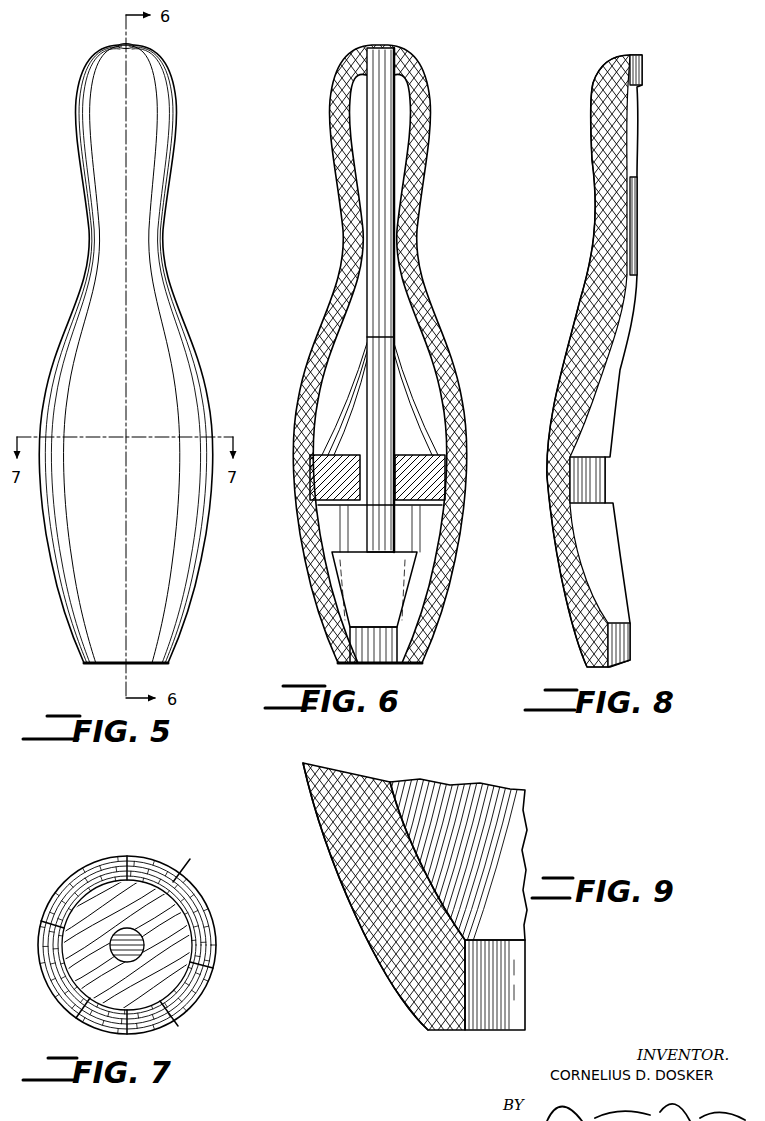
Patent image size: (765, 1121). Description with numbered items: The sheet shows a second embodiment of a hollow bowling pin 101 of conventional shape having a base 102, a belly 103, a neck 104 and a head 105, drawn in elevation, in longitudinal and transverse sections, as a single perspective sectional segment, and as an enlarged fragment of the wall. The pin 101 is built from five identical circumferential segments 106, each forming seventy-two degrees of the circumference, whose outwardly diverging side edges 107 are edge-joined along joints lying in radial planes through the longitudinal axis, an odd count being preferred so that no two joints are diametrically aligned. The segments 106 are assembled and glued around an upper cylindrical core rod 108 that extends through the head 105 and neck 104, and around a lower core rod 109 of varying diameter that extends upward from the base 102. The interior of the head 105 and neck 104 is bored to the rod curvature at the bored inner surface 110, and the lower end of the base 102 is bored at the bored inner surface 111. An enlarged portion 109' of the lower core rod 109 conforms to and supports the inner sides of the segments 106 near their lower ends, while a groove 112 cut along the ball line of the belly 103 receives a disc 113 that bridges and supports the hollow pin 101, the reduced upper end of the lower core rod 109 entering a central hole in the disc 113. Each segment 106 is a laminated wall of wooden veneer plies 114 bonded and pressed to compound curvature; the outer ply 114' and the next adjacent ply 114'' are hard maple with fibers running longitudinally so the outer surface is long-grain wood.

In FIG. 5, the bowling pin 101 is at (208, 355).
In FIG. 6, the bowling pin 101 is at (301, 355).
In FIG. 7, the bowling pin 101 is at (219, 926).
In FIG. 5, the base 102 is at (88, 610).
In FIG. 5, the belly 103 is at (205, 404).
In FIG. 5, the neck 104 is at (103, 240).
In FIG. 5, the head 105 is at (95, 80).
In FIG. 8, the circumferential segment 106 is at (650, 292).
In FIG. 7, the circumferential segment 106 is at (158, 856).
In FIG. 8, the side edge 107 is at (622, 362).
In FIG. 7, the side edge 107 is at (170, 998).
In FIG. 6, the upper core rod 108 is at (383, 122).
In FIG. 6, the lower core rod 109 is at (403, 655).
In FIG. 7, the lower core rod 109 is at (168, 913).
In FIG. 9, the lower core rod 109 is at (530, 985).
In FIG. 6, the enlarged portion 109' is at (374, 589).
In FIG. 9, the enlarged portion 109' is at (470, 864).
In FIG. 8, the bored inner surface 110 is at (643, 63).
In FIG. 8, the bored inner surface of base 111 is at (628, 655).
In FIG. 8, the groove 112 is at (600, 486).
In FIG. 6, the disc 113 is at (348, 456).
In FIG. 7, the disc 113 is at (173, 953).
In FIG. 9, the wooden veneer plies 114 is at (384, 888).
In FIG. 9, the outer ply 114' is at (365, 896).
In FIG. 9, the next adjacent ply 114'' is at (427, 847).